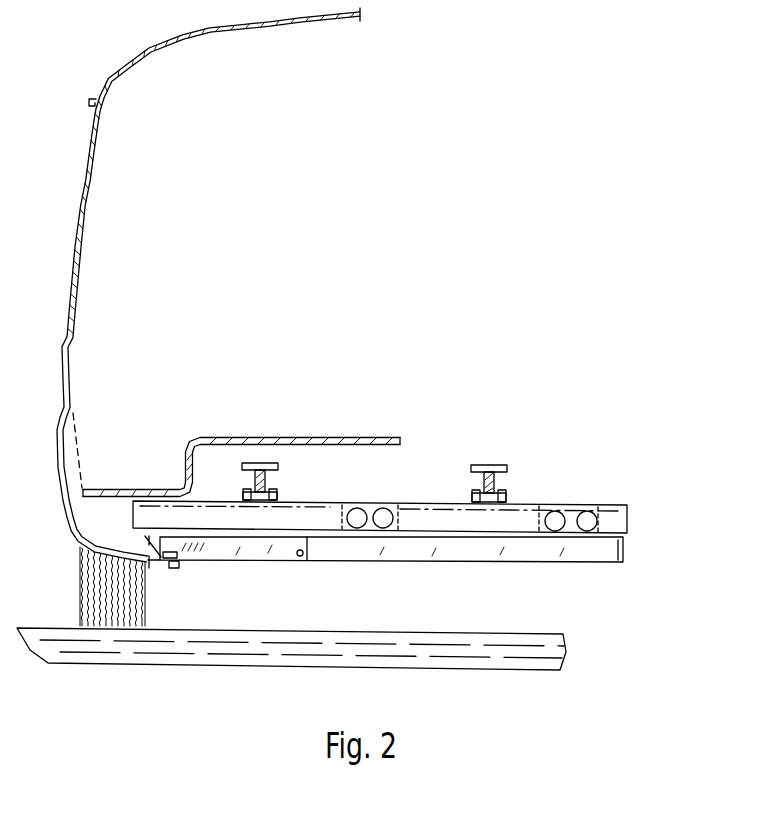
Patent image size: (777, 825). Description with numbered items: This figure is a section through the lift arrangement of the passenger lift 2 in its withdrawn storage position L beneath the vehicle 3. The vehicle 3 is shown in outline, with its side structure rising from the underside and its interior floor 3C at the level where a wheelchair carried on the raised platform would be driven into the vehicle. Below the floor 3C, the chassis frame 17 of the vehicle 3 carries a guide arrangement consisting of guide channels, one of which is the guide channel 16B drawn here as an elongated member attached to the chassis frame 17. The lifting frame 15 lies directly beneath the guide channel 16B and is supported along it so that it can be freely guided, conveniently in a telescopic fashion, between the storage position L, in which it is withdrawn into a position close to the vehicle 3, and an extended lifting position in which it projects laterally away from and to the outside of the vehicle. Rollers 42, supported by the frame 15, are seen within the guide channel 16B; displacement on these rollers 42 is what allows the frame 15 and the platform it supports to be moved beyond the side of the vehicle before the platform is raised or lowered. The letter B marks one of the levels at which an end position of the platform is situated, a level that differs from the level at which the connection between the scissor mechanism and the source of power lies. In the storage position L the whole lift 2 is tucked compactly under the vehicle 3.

The vehicle 3 is at (88, 185).
The floor of the vehicle 3C is at (342, 437).
The chassis frame 17 is at (497, 461).
The rollers 42 is at (587, 510).
The guide channel 16B is at (627, 518).
The frame 15 is at (606, 555).
The passenger lift 2 is at (273, 562).
The level B is at (362, 263).
The storage position L is at (481, 607).